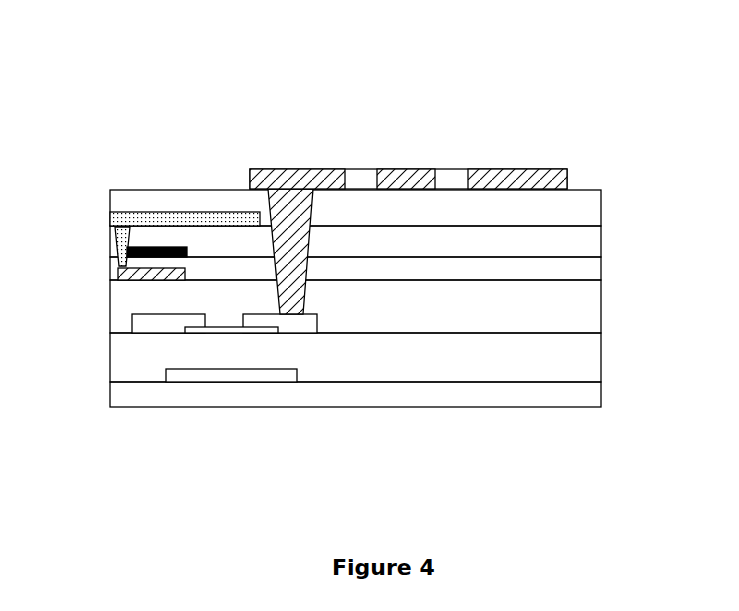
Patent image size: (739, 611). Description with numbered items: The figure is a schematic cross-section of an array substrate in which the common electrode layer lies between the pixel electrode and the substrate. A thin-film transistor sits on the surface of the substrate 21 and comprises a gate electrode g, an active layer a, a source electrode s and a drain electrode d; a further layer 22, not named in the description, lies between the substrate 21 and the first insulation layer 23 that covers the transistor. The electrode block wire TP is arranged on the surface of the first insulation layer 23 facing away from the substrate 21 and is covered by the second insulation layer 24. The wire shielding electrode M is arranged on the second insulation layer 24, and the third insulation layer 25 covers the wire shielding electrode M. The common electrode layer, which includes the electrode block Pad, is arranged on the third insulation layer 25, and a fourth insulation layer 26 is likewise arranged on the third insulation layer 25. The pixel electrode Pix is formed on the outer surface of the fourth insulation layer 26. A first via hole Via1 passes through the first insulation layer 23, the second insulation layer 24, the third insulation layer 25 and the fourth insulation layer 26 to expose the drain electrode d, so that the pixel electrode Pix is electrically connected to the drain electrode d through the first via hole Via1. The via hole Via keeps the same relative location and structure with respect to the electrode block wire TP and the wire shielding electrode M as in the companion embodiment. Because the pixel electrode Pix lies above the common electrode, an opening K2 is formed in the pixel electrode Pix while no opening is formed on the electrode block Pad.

The substrate 21 is at (448, 397).
The gate insulating layer 22 is at (487, 356).
The first insulation layer 23 is at (565, 316).
The second insulation layer 24 is at (583, 273).
The third insulation layer 25 is at (588, 242).
The fourth insulation layer 26 is at (590, 204).
The gate electrode g is at (272, 376).
The active layer a is at (222, 333).
The source electrode s is at (157, 323).
The drain electrode d is at (308, 327).
The electrode block wire TP is at (143, 280).
The first via hole Via1 is at (293, 296).
The via hole Via is at (123, 243).
The opening K2 is at (358, 178).
The pixel electrode Pix is at (513, 177).
The electrode block Pad is at (214, 213).
The wire shielding electrode M is at (152, 248).